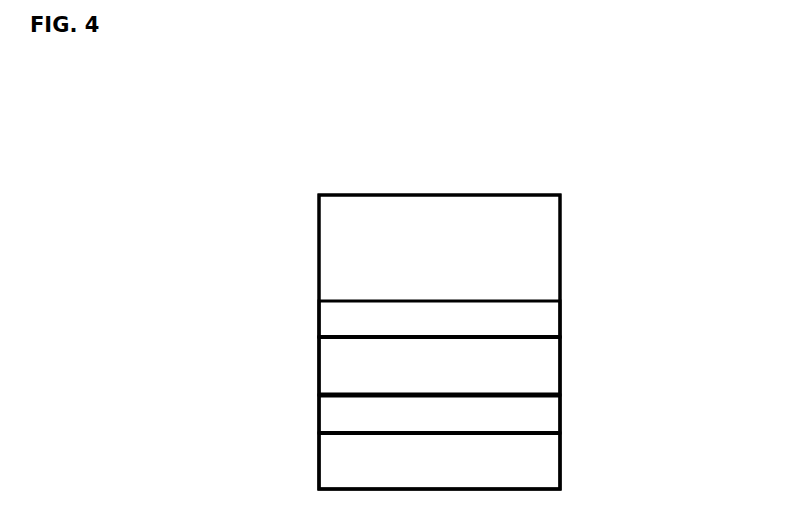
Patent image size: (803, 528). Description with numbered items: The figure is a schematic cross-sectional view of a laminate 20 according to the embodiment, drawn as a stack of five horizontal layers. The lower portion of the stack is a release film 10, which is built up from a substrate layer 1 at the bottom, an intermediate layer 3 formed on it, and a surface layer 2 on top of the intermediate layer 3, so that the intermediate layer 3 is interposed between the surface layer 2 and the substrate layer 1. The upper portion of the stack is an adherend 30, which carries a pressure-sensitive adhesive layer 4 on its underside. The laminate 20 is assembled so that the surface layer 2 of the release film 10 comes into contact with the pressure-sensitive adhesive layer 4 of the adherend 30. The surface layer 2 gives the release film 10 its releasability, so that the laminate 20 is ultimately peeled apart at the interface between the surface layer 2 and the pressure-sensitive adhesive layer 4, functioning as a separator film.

The laminate 20 is at (448, 150).
The adherend 30 is at (297, 195).
The release film 10 is at (297, 343).
The pressure-sensitive adhesive layer 4 is at (538, 322).
The surface layer 2 is at (538, 376).
The intermediate layer 3 is at (538, 415).
The substrate layer 1 is at (538, 472).